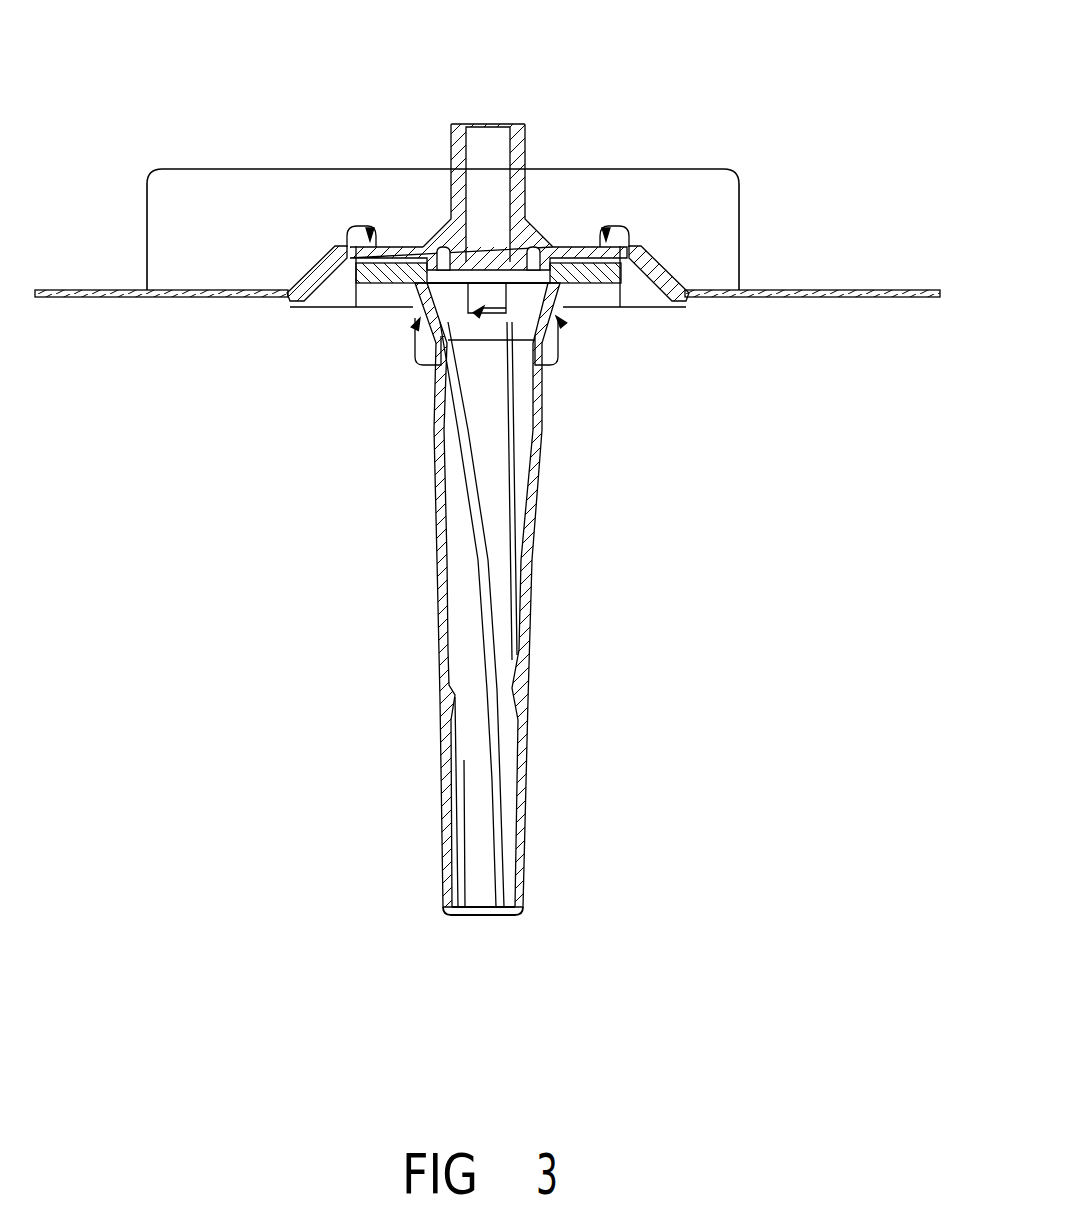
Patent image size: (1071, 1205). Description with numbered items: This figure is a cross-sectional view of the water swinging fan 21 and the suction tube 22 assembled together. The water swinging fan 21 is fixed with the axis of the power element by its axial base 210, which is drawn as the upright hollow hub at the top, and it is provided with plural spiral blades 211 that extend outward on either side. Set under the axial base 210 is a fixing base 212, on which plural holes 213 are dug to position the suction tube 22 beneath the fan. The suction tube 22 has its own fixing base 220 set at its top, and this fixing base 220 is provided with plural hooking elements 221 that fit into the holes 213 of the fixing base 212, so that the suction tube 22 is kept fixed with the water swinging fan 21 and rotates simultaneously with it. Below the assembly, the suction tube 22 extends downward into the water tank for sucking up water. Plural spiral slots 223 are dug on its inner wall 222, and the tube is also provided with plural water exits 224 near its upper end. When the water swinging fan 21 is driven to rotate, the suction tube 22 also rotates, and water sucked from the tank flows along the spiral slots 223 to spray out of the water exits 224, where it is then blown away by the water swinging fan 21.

The water swinging fan 21 is at (827, 298).
The suction tube 22 is at (437, 638).
The axial base 210 is at (488, 122).
The spiral blades 211 is at (197, 187).
The fixing base 212 is at (575, 248).
The holes 213 is at (370, 230).
The fixing base 220 is at (390, 280).
The hooking elements 221 is at (345, 228).
The inner wall 222 is at (472, 775).
The spiral slots 223 is at (528, 492).
The water exits 224 is at (480, 310).